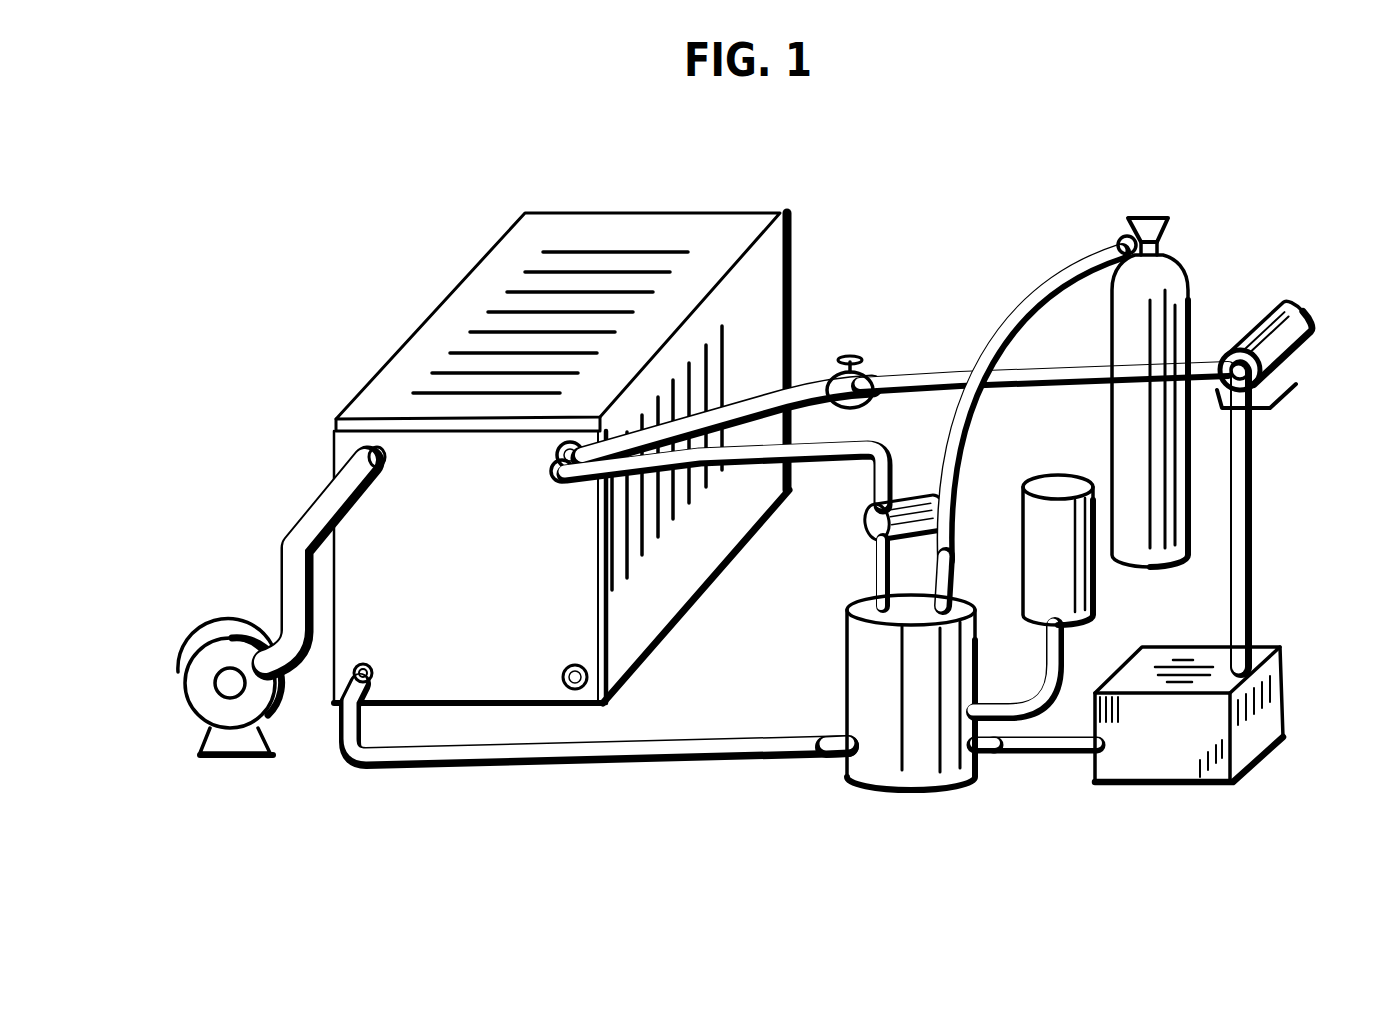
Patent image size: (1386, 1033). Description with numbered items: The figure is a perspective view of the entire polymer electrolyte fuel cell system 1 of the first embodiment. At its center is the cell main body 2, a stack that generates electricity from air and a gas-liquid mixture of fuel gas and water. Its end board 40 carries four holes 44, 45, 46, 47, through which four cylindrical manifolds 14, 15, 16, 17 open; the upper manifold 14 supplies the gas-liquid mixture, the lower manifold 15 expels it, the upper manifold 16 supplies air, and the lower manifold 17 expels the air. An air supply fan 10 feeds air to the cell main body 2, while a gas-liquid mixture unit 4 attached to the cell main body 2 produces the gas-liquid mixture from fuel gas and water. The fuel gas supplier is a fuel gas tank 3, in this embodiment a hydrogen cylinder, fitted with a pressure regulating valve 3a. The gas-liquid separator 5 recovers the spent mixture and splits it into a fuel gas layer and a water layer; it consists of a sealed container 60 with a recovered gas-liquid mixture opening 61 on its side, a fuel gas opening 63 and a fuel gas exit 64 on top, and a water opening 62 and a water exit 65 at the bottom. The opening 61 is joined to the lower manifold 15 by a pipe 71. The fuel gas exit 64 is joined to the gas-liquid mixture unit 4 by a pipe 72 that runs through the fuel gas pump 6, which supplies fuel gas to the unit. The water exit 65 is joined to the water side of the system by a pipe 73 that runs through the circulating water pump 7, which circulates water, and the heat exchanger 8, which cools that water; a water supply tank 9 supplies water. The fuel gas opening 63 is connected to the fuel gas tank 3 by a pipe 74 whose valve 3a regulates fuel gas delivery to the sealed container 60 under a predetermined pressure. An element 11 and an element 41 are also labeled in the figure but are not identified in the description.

The polymer electrolyte fuel cell system 1 is at (1055, 138).
The cell main body 2 is at (524, 413).
The fuel gas tank 3 is at (1186, 292).
The pressure regulating valve 3a is at (1118, 240).
The gas-liquid mixture unit 4 is at (552, 474).
The gas-liquid separator 5 is at (865, 740).
The fuel gas pump 6 is at (908, 504).
The circulating water pump 7 is at (1312, 322).
The heat exchanger 8 is at (1266, 701).
The water supply tank 9 is at (1092, 566).
The air supply fan 10 is at (183, 686).
The valve 11 is at (851, 354).
The upper manifold 14 is at (555, 460).
The lower manifold 15 is at (384, 672).
The upper manifold 16 is at (379, 476).
The lower manifold 17 is at (560, 680).
The end board 40 is at (338, 428).
The top plate 41 is at (548, 212).
The hole 44 is at (580, 440).
The hole 45 is at (363, 662).
The hole 46 is at (386, 455).
The hole 47 is at (573, 664).
The sealed container 60 is at (918, 750).
The recovered gas-liquid mixture opening 61 is at (835, 762).
The water opening 62 is at (981, 694).
The fuel gas opening 63 is at (951, 592).
The fuel gas exit 64 is at (868, 600).
The water exit 65 is at (985, 760).
The pipe 71 is at (560, 770).
The pipe 72 is at (820, 470).
The pipe 73 is at (894, 376).
The pipe 74 is at (1030, 308).